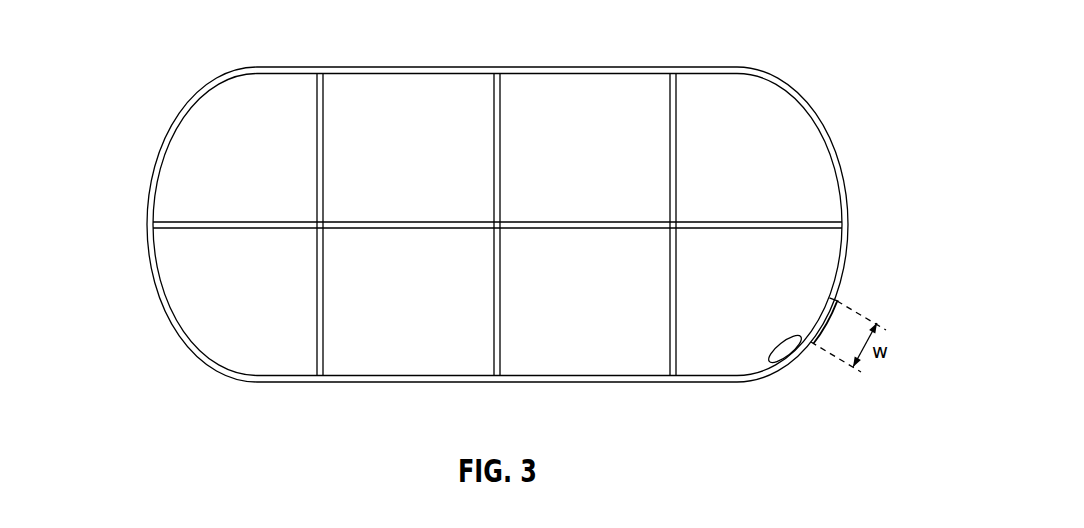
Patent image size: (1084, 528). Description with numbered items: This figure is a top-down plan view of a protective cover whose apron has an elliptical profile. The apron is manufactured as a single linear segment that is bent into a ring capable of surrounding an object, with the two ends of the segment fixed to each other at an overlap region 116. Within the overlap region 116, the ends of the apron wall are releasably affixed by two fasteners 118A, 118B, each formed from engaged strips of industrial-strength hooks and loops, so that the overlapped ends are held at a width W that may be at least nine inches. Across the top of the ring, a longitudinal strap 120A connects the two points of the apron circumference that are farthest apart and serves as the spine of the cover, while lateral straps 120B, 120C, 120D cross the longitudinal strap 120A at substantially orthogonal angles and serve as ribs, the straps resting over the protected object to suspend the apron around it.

The overlap region 116 is at (800, 312).
The fastener 118A is at (771, 362).
The fastener 118B is at (836, 299).
The longitudinal strap 120A is at (152, 227).
The lateral strap 120B is at (322, 80).
The lateral strap 120C is at (498, 80).
The lateral strap 120D is at (676, 80).